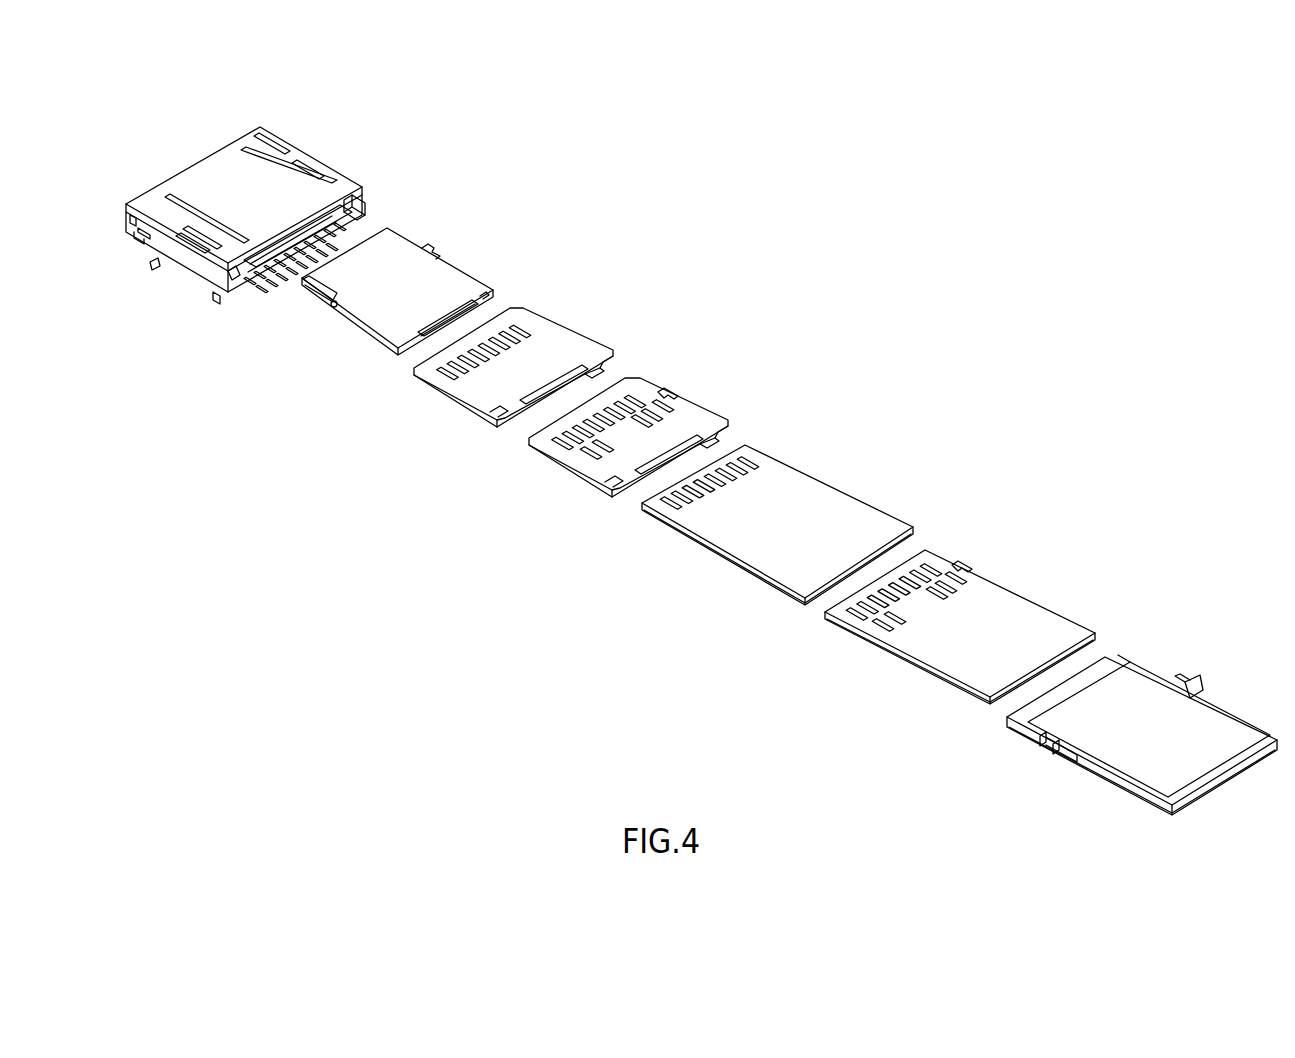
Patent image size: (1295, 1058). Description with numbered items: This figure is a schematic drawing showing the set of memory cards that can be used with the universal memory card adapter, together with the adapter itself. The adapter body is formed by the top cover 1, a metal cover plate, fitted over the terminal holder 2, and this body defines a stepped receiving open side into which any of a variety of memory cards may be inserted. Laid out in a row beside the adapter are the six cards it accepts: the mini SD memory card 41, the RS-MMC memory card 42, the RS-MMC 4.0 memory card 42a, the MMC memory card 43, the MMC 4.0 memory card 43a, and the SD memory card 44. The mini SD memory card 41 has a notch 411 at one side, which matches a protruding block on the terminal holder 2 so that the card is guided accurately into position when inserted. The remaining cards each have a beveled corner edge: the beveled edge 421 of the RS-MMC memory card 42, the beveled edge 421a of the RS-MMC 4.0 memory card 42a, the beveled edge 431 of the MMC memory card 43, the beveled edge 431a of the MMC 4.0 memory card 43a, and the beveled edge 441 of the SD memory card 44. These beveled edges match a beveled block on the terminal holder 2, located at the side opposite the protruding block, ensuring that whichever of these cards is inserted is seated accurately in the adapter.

The top cover 1 is at (227, 196).
The terminal holder 2 is at (363, 208).
The mini SD memory card 41 is at (360, 336).
The notch 411 is at (312, 295).
The RS-MMC memory card 42 is at (506, 309).
The beveled edge 421 is at (530, 310).
The RS-MMC 4.0 memory card 42a is at (621, 377).
The beveled edge 421a is at (645, 377).
The MMC memory card 43 is at (777, 451).
The beveled edge 431 is at (758, 445).
The MMC 4.0 memory card 43a is at (960, 561).
The beveled edge 431a is at (942, 548).
The SD memory card 44 is at (1142, 671).
The beveled edge 441 is at (1122, 657).